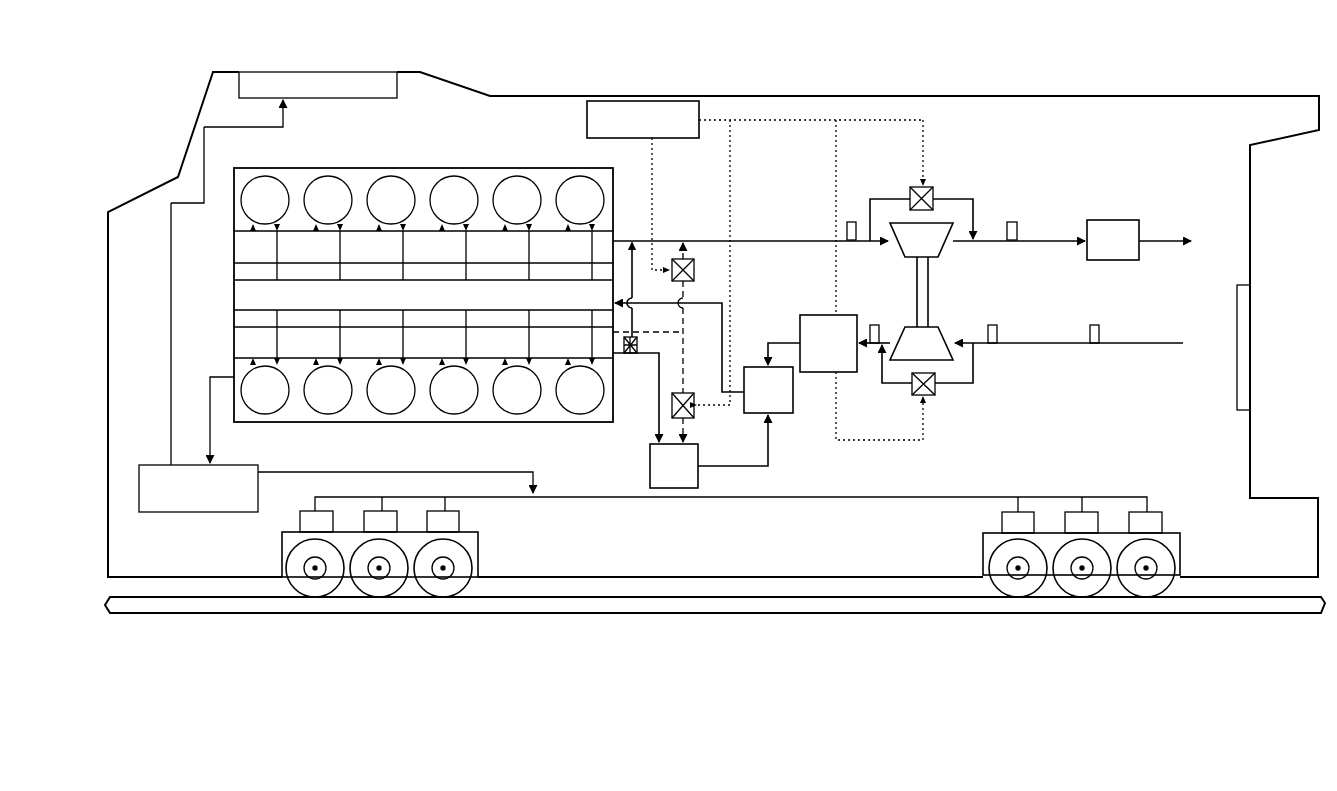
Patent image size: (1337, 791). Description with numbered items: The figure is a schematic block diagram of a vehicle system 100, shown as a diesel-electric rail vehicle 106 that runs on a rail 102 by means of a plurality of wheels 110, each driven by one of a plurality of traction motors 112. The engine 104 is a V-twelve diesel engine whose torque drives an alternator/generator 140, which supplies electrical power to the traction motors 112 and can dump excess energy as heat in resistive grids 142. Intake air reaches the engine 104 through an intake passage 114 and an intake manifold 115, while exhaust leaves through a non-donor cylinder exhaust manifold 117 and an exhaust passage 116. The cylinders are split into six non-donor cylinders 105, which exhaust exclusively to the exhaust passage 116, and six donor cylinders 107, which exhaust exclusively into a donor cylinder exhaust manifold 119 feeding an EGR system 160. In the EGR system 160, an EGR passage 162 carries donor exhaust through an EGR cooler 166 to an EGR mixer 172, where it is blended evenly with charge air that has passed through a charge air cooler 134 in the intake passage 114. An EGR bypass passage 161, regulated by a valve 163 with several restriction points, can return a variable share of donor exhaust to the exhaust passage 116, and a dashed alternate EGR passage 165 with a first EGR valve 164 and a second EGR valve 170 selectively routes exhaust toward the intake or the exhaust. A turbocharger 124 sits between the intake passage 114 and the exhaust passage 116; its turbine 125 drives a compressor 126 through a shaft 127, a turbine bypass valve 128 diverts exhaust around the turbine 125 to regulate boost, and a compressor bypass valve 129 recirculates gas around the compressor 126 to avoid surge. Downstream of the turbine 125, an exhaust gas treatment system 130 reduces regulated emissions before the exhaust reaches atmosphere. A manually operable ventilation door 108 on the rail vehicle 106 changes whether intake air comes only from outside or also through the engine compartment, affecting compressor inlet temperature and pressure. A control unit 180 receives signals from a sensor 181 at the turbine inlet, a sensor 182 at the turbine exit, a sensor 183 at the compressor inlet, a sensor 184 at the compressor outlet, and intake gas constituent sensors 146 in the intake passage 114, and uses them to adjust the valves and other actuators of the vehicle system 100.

The vehicle system 100 is at (1158, 70).
The rail 102 is at (1240, 613).
The engine 104 is at (514, 160).
The non-donor cylinders 105 is at (393, 178).
The rail vehicle 106 is at (1018, 96).
The donor cylinders 107 is at (396, 421).
The ventilation door 108 is at (1245, 318).
The wheels 110 is at (468, 550).
The traction motors 112 is at (462, 520).
The intake passage 114 is at (1140, 344).
The intake manifold 115 is at (424, 296).
The exhaust passage 116 is at (765, 240).
The non-donor cylinder exhaust manifold 117 is at (232, 248).
The donor cylinder exhaust manifold 119 is at (232, 345).
The turbocharger 124 is at (955, 387).
The turbine 125 is at (921, 240).
The compressor 126 is at (921, 343).
The shaft 127 is at (932, 305).
The turbine bypass valve 128 is at (933, 190).
The compressor bypass valve 129 is at (910, 405).
The exhaust gas treatment system 130 is at (1139, 240).
The charge air cooler 134 is at (828, 343).
The alternator/generator 140 is at (336, 357).
The resistive grids 142 is at (390, 70).
The intake gas constituent sensors 146 is at (1096, 322).
The EGR system 160 is at (790, 455).
The EGR bypass passage 161 is at (634, 262).
The EGR passage 162 is at (657, 378).
The valve 163 is at (633, 335).
The first EGR valve 164 is at (688, 272).
The alternate EGR passage 165 is at (681, 340).
The EGR cooler 166 is at (709, 451).
The second EGR valve 170 is at (690, 420).
The EGR mixer 172 is at (772, 378).
The control unit 180 is at (756, 270).
The sensor 181 is at (852, 220).
The sensor 182 is at (1012, 220).
The sensor 183 is at (992, 323).
The sensor 184 is at (875, 323).